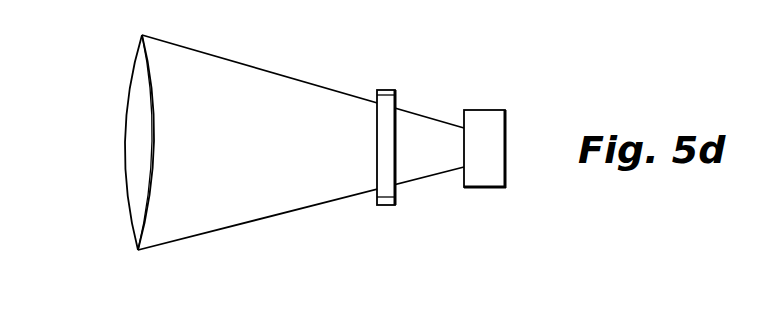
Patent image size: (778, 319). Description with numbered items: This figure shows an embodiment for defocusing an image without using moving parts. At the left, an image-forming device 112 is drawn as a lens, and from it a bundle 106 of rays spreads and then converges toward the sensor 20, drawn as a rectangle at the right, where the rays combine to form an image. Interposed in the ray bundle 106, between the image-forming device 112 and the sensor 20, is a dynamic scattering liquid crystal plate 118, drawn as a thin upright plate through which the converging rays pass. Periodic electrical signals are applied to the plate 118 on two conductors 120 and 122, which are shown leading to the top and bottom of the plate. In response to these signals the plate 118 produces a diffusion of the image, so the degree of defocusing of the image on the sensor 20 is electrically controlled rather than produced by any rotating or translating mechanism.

The sensor 20 is at (474, 113).
The bundle of rays 106 is at (256, 68).
The image-forming device 112 is at (132, 91).
The dynamic scattering liquid crystal plate 118 is at (385, 129).
The conductor 120 is at (385, 88).
The conductor 122 is at (387, 206).